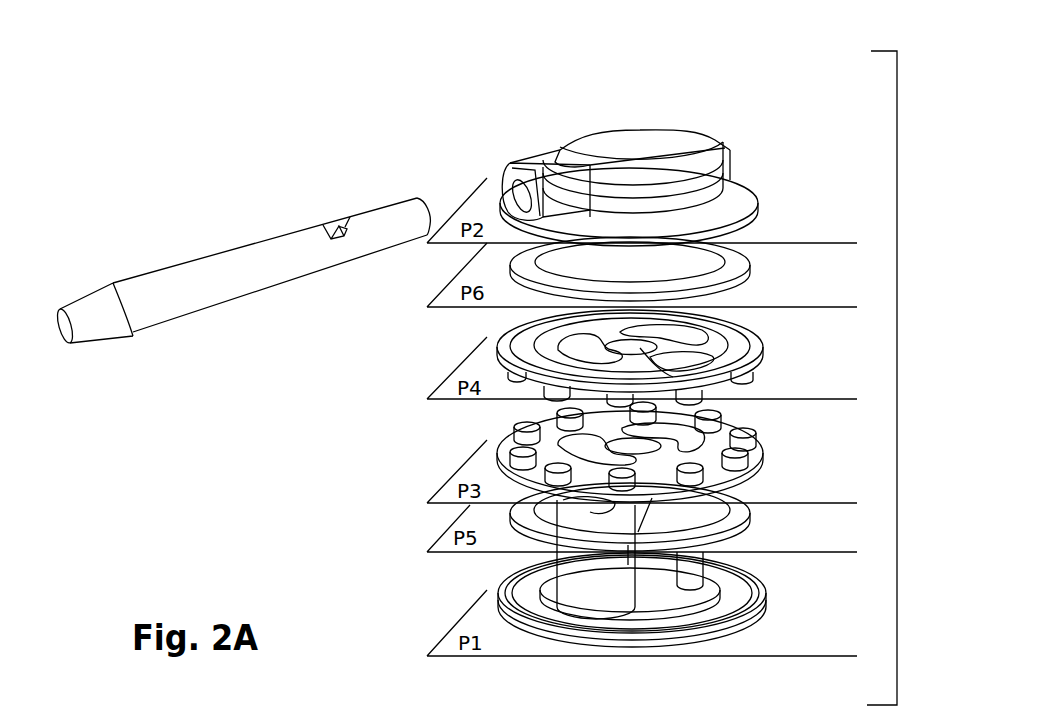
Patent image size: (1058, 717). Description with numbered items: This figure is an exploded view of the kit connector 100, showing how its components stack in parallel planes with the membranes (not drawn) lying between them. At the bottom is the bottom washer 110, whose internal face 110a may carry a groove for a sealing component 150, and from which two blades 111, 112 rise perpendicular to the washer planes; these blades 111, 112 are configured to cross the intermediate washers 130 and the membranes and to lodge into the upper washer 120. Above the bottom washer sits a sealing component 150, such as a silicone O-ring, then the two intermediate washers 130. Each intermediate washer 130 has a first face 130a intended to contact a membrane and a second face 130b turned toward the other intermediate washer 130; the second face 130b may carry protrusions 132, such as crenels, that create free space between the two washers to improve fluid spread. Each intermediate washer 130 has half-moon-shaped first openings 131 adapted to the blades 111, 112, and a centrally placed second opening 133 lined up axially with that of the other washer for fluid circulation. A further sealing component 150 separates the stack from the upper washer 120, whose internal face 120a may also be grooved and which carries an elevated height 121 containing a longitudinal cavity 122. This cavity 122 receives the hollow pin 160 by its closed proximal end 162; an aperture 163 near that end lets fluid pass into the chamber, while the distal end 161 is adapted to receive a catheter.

The connector 100 is at (902, 38).
The bottom washer 110 is at (679, 602).
The internal face of the bottom washer 110a is at (735, 605).
The blade 111 is at (602, 578).
The blade 112 is at (697, 578).
The upper washer 120 is at (687, 157).
The internal face of the upper washer 120a is at (753, 227).
The elevated height 121 is at (632, 155).
The longitudinal cavity 122 is at (517, 192).
The intermediate washer 130 is at (694, 452).
The first face of the intermediate washer 130a is at (696, 358).
The second face of the intermediate washer 130b is at (722, 475).
The first openings 131 is at (697, 447).
The protrusions 132 is at (727, 412).
The second opening 133 is at (760, 369).
The sealing components 150 is at (740, 280).
The hollow pin 160 is at (248, 255).
The distal end 161 is at (93, 303).
The proximal end 162 is at (427, 210).
The aperture 163 is at (333, 223).